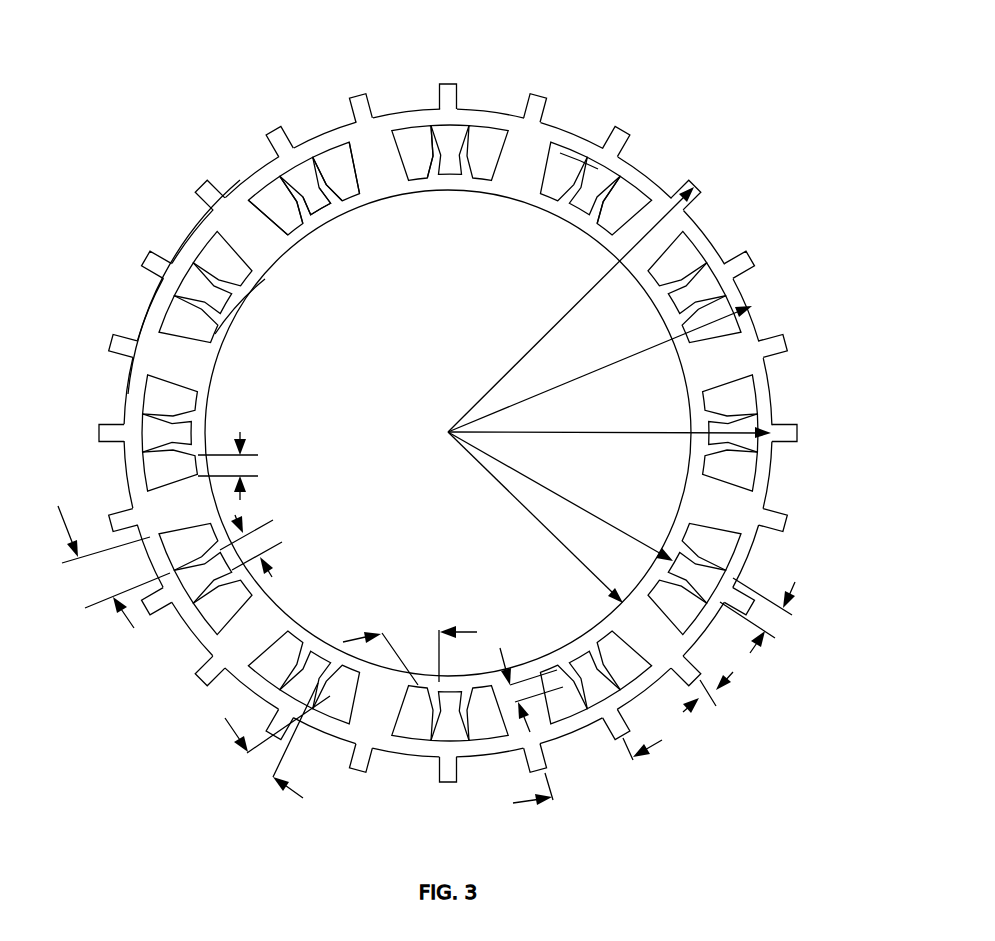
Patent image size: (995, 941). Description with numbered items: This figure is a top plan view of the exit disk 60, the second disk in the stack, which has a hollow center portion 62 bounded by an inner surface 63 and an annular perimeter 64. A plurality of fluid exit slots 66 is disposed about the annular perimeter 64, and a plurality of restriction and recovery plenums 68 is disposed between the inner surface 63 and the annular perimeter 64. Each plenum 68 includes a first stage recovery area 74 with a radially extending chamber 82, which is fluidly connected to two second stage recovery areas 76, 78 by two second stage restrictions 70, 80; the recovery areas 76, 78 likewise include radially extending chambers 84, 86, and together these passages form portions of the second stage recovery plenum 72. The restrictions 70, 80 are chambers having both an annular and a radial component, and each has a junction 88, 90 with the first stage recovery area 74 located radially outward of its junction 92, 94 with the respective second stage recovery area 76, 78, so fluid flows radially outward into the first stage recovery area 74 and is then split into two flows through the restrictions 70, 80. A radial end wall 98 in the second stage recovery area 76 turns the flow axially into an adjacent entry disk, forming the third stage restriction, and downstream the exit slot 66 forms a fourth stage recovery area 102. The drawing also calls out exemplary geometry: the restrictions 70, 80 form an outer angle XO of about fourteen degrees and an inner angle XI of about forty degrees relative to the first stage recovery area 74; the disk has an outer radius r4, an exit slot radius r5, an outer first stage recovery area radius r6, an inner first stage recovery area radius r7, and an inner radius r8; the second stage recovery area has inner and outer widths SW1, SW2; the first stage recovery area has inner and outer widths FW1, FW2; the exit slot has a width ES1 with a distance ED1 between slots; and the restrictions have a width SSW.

The exit disk 60 is at (721, 157).
The hollow center portion 62 is at (437, 538).
The inner surface 63 is at (238, 307).
The annular perimeter 64 is at (205, 183).
The fluid exit slots 66 is at (190, 224).
The restriction and recovery plenums 68 is at (412, 140).
The second stage restriction 70 is at (298, 203).
The second stage recovery plenum 72 is at (489, 150).
The first stage recovery area 74 is at (311, 190).
The second stage recovery area 76 is at (273, 200).
The second stage recovery area 78 is at (340, 160).
The second stage restriction 80 is at (331, 185).
The radially extending chamber 82 is at (302, 175).
The radially extending chamber 84 is at (268, 207).
The radially extending chamber 86 is at (347, 153).
The junction 88 is at (583, 180).
The junction 90 is at (608, 190).
The junction 92 is at (578, 140).
The junction 94 is at (610, 213).
The radial end wall 98 is at (424, 123).
The fourth stage recovery area 102 is at (165, 622).
The inner second stage recovery area width SW1 is at (258, 466).
The outer second stage recovery area width SW2 is at (85, 582).
The inner first stage recovery area width FW1 is at (262, 537).
The outer first stage recovery area width FW2 is at (780, 623).
The second stage restriction width SSW is at (530, 687).
The distance between fluid exit slots ED1 is at (716, 700).
The width of the fluid exit slot ES1 is at (592, 768).
The inner angle XI is at (413, 642).
The outer angle XO is at (260, 763).
The outer radius r4 is at (548, 335).
The exit slot radius r5 is at (630, 355).
The outer first stage recovery area radius r6 is at (633, 432).
The inner first stage recovery area radius r7 is at (612, 524).
The inner radius r8 is at (578, 558).